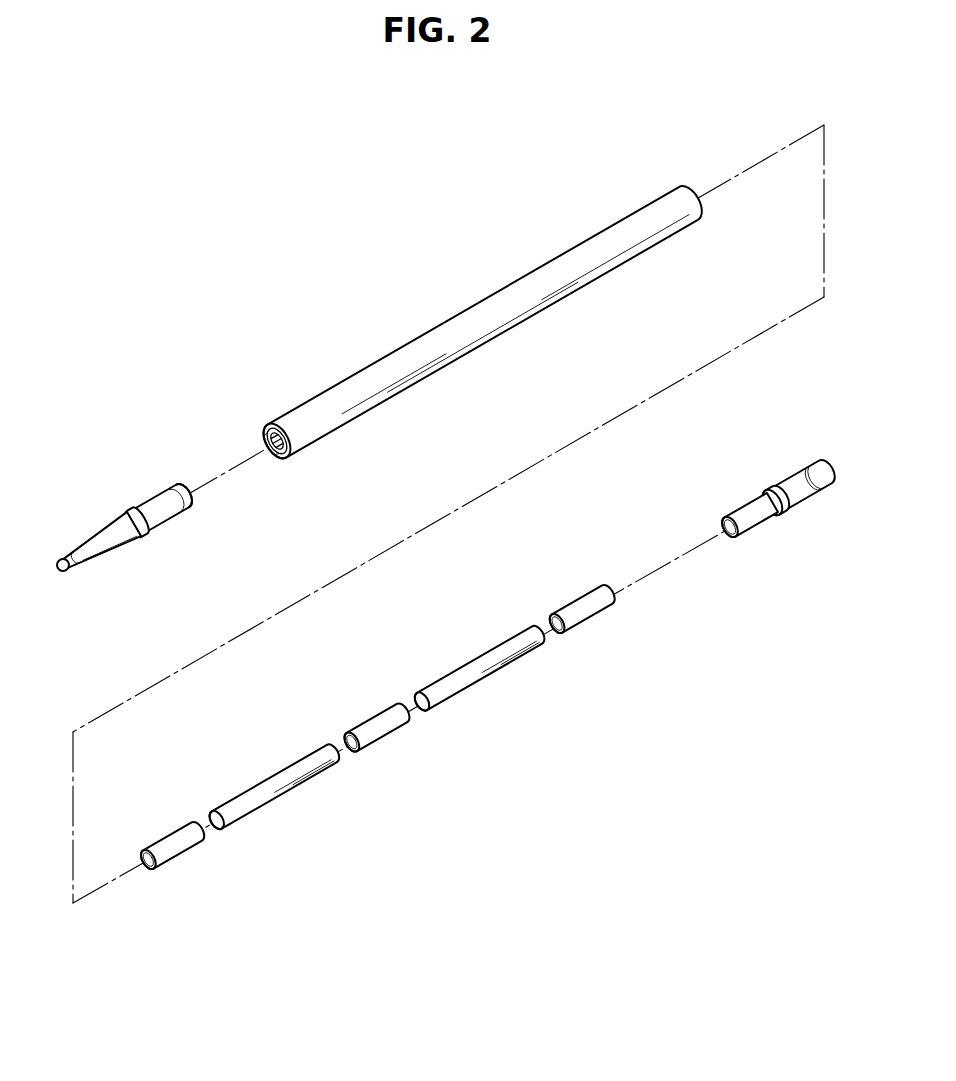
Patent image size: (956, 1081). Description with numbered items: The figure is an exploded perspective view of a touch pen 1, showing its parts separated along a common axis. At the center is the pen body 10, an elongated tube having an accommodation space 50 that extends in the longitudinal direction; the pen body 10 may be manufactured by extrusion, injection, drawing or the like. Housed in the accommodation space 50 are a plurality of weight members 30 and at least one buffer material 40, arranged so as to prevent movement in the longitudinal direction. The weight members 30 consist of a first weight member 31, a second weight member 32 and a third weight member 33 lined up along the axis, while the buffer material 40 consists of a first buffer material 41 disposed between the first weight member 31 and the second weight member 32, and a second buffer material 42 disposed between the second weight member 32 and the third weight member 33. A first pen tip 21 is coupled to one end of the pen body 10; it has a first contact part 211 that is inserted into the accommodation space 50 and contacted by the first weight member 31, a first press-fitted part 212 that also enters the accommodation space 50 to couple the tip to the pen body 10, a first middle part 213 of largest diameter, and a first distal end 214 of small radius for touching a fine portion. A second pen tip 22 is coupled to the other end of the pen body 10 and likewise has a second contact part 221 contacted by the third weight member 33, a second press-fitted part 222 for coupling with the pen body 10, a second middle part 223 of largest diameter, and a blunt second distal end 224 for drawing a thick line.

The touch pen 1 is at (197, 355).
The pen body 10 is at (479, 313).
The accommodation space 50 is at (267, 437).
The first pen tip 21 is at (133, 505).
The first contact part 211 is at (184, 501).
The first press-fitted part 212 is at (156, 502).
The first middle part 213 is at (149, 534).
The first distal end 214 is at (58, 563).
The second pen tip 22 is at (760, 477).
The second contact part 221 is at (727, 527).
The second press-fitted part 222 is at (749, 507).
The second middle part 223 is at (788, 507).
The second distal end 224 is at (822, 464).
The weight members 30 is at (377, 701).
The first weight member 31 is at (167, 846).
The second weight member 32 is at (370, 723).
The third weight member 33 is at (584, 603).
The buffer material 40 is at (377, 712).
The first buffer material 41 is at (267, 786).
The second buffer material 42 is at (477, 665).